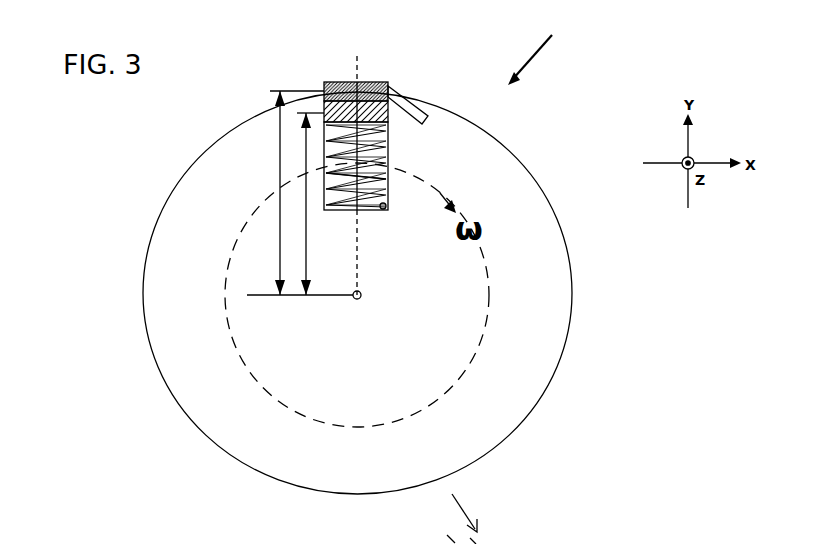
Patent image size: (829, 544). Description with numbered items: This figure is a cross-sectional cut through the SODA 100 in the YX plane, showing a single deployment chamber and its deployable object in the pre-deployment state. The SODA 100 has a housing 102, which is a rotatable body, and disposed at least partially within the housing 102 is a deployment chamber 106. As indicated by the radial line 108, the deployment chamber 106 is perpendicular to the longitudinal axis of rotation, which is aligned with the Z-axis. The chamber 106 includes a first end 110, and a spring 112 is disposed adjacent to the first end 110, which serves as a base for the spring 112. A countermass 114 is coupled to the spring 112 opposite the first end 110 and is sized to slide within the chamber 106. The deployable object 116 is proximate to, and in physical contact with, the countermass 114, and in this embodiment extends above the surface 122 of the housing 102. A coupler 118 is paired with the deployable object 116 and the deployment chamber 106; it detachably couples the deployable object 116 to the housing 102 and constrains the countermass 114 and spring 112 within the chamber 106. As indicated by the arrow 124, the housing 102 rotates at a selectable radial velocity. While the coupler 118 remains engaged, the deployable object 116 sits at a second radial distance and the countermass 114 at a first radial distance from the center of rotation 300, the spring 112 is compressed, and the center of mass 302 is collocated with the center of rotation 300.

The SODA 100 is at (637, 282).
The housing 102 is at (576, 267).
The deployment chamber 106 is at (396, 143).
The radial line 108 is at (357, 167).
The first end 110 is at (377, 212).
The spring 112 is at (380, 172).
The countermass 114 is at (368, 110).
The deployable object 116 is at (328, 82).
The coupler 118 is at (396, 97).
The surface 122 is at (253, 121).
The arrow 124 is at (368, 295).
The center of rotation 300 is at (361, 294).
The center of mass 302 is at (360, 298).